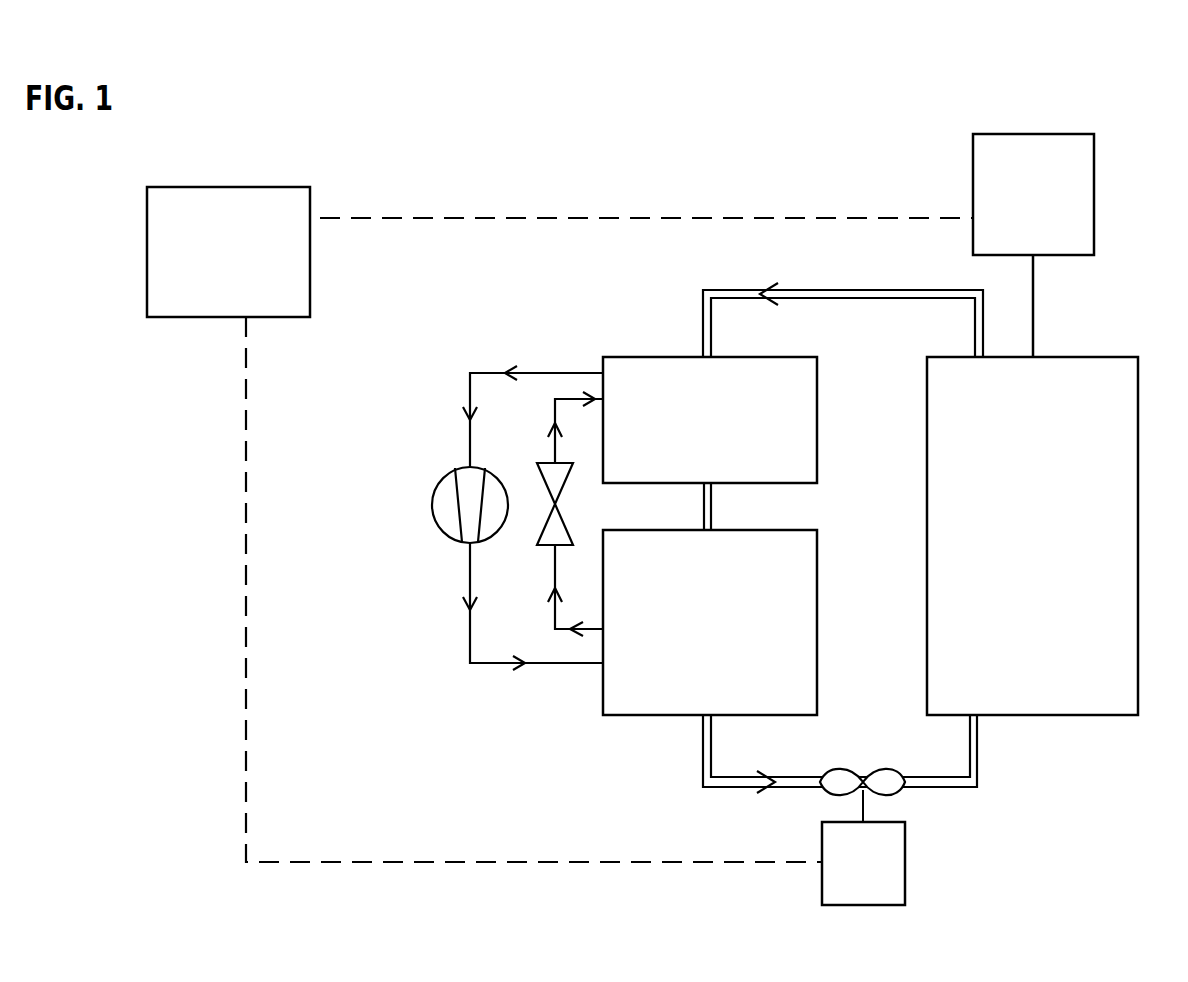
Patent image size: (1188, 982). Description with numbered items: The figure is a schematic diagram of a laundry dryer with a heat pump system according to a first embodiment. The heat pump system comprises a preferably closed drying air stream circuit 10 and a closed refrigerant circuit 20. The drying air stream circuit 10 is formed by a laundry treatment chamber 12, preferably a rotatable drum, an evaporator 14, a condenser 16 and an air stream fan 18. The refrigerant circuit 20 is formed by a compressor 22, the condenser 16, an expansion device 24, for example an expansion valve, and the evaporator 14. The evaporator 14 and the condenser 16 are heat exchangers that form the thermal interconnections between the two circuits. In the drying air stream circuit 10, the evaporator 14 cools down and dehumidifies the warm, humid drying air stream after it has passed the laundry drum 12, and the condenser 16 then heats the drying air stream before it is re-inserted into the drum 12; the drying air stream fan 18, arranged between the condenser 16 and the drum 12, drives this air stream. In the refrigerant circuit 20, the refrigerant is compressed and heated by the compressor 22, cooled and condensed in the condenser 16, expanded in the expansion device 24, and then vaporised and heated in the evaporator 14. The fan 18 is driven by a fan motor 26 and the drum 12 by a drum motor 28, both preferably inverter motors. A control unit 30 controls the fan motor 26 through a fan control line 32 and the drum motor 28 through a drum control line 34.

The air stream circuit 10 is at (870, 292).
The laundry treatment chamber 12 is at (1030, 706).
The evaporator 14 is at (645, 370).
The condenser 16 is at (656, 703).
The air stream fan 18 is at (888, 778).
The refrigerant circuit 20 is at (560, 665).
The compressor 22 is at (445, 492).
The expansion device 24 is at (545, 537).
The fan motor 26 is at (833, 883).
The drum motor 28 is at (1078, 178).
The control unit 30 is at (207, 308).
The fan control line 32 is at (470, 862).
The drum control line 34 is at (680, 218).